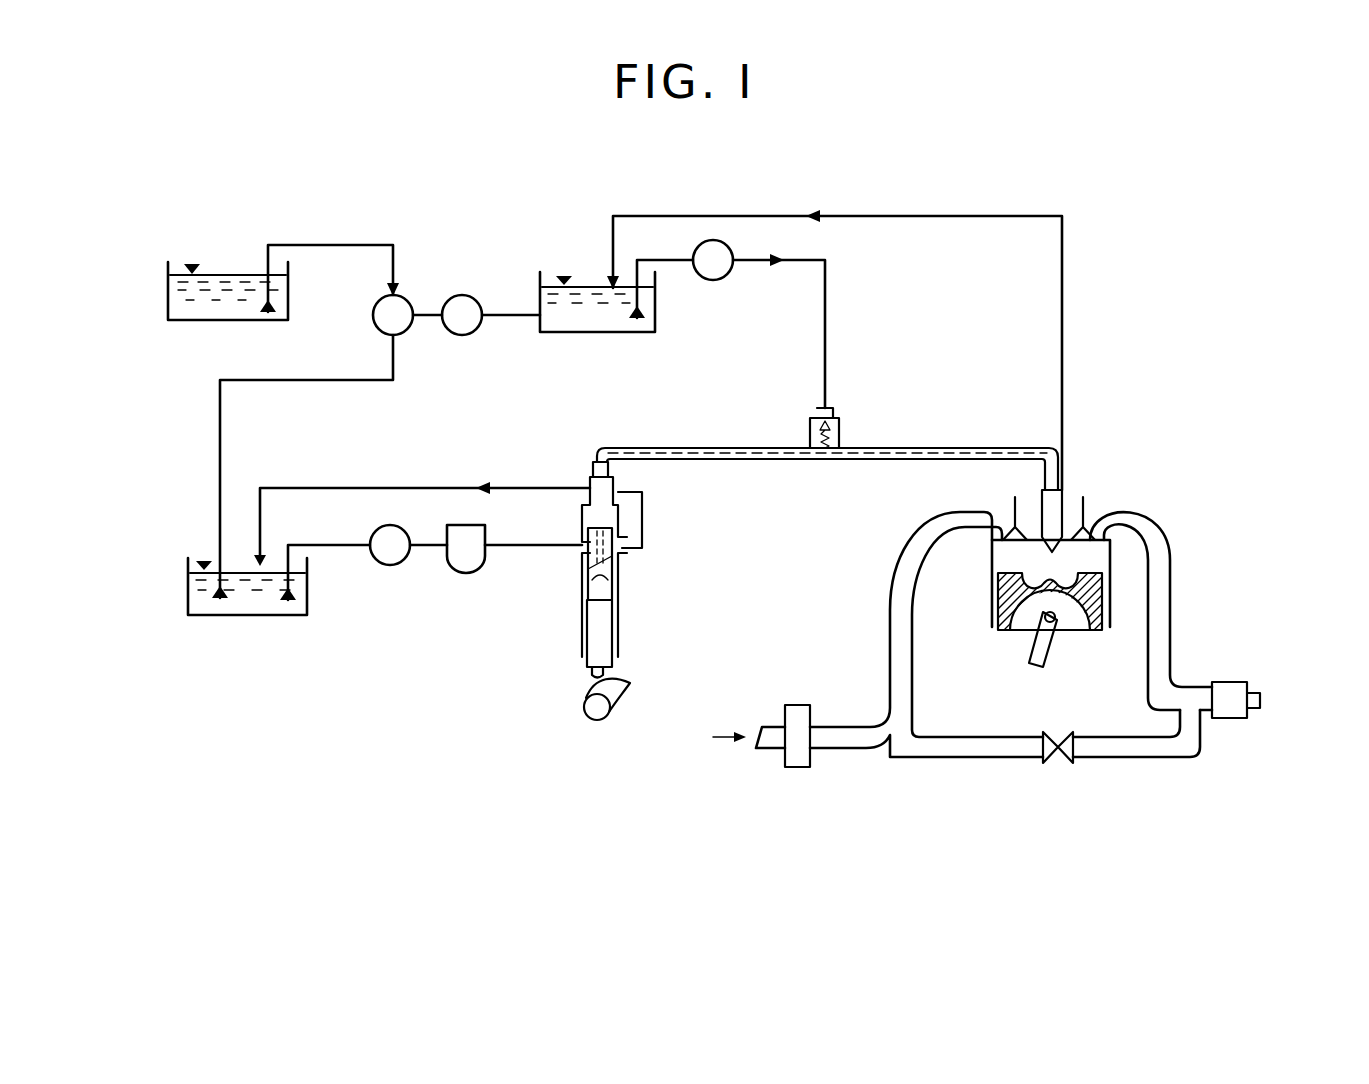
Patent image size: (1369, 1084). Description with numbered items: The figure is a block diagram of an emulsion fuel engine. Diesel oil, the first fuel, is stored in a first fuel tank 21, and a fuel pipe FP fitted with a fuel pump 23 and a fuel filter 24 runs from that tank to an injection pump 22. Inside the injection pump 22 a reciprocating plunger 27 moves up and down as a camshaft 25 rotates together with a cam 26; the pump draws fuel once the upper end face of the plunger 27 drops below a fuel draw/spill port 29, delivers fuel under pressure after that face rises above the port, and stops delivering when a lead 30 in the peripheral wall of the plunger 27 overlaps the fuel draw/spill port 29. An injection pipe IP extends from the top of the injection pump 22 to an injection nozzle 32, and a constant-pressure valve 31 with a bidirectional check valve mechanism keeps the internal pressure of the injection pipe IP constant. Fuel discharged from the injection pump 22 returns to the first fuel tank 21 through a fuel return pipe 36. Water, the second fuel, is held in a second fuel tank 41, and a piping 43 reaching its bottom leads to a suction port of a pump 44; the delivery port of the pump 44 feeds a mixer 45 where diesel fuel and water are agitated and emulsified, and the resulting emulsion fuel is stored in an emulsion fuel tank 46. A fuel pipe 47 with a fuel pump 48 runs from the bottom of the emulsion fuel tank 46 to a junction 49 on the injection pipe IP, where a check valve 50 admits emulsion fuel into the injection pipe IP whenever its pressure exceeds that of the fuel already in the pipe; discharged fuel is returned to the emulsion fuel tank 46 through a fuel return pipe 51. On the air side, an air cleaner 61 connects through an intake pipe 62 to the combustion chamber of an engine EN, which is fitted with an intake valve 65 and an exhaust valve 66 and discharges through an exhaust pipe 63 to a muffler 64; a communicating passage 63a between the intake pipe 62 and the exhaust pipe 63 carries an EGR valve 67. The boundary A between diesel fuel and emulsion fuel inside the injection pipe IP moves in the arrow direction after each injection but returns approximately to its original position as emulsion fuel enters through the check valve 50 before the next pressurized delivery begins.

The first fuel tank 21 is at (255, 617).
The injection pump 22 is at (604, 612).
The fuel pump 23 is at (390, 567).
The fuel filter 24 is at (463, 574).
The camshaft 25 is at (597, 720).
The cam 26 is at (622, 702).
The plunger 27 is at (606, 642).
The fuel draw/spill port 29 is at (625, 540).
The lead 30 is at (606, 575).
The constant-pressure valve 31 is at (590, 464).
The injection nozzle 32 is at (1052, 520).
The fuel return pipe 36 is at (425, 488).
The second fuel tank 41 is at (190, 322).
The piping 43 is at (345, 245).
The pump 44 is at (407, 300).
The mixer 45 is at (470, 296).
The emulsion fuel tank 46 is at (600, 334).
The fuel pipe 47 is at (828, 262).
The fuel pump 48 is at (718, 282).
The junction 49 is at (842, 440).
The check valve 50 is at (814, 412).
The fuel return pipe 51 is at (1020, 216).
The air cleaner 61 is at (798, 769).
The intake pipe 62 is at (905, 580).
The exhaust pipe 63 is at (1172, 570).
The communicating passage 63a is at (1160, 760).
The muffler 64 is at (1232, 680).
The intake valve 65 is at (1006, 525).
The exhaust valve 66 is at (1086, 533).
The EGR valve 67 is at (1058, 765).
The injection pipe IP is at (713, 447).
The boundary A is at (806, 465).
The engine EN is at (987, 598).
The fuel pipe FP is at (530, 548).